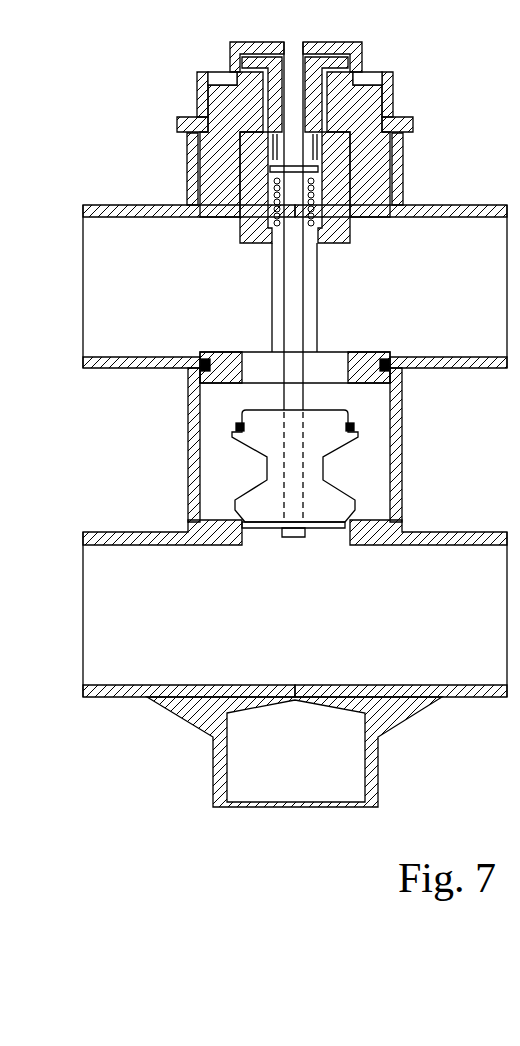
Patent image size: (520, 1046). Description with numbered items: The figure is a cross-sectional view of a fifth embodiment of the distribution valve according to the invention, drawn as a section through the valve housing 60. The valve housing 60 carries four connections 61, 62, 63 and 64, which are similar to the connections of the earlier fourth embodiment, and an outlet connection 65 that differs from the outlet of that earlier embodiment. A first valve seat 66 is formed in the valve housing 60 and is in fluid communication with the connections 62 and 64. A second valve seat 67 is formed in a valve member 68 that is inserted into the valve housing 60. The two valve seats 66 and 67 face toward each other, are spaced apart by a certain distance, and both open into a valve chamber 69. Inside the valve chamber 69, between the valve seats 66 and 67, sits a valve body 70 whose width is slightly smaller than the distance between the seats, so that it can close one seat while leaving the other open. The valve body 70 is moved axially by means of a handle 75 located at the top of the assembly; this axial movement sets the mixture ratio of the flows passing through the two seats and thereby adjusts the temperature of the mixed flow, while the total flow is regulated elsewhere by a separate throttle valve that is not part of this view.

The valve housing 60 is at (188, 407).
The connection 61 is at (477, 205).
The connection 62 is at (447, 533).
The connection 63 is at (107, 205).
The connection 64 is at (95, 532).
The outlet connection 65 is at (375, 787).
The first valve seat 66 is at (345, 540).
The second valve seat 67 is at (342, 353).
The valve member 68 is at (400, 164).
The valve chamber 69 is at (370, 408).
The valve body 70 is at (327, 455).
The handle 75 is at (363, 48).